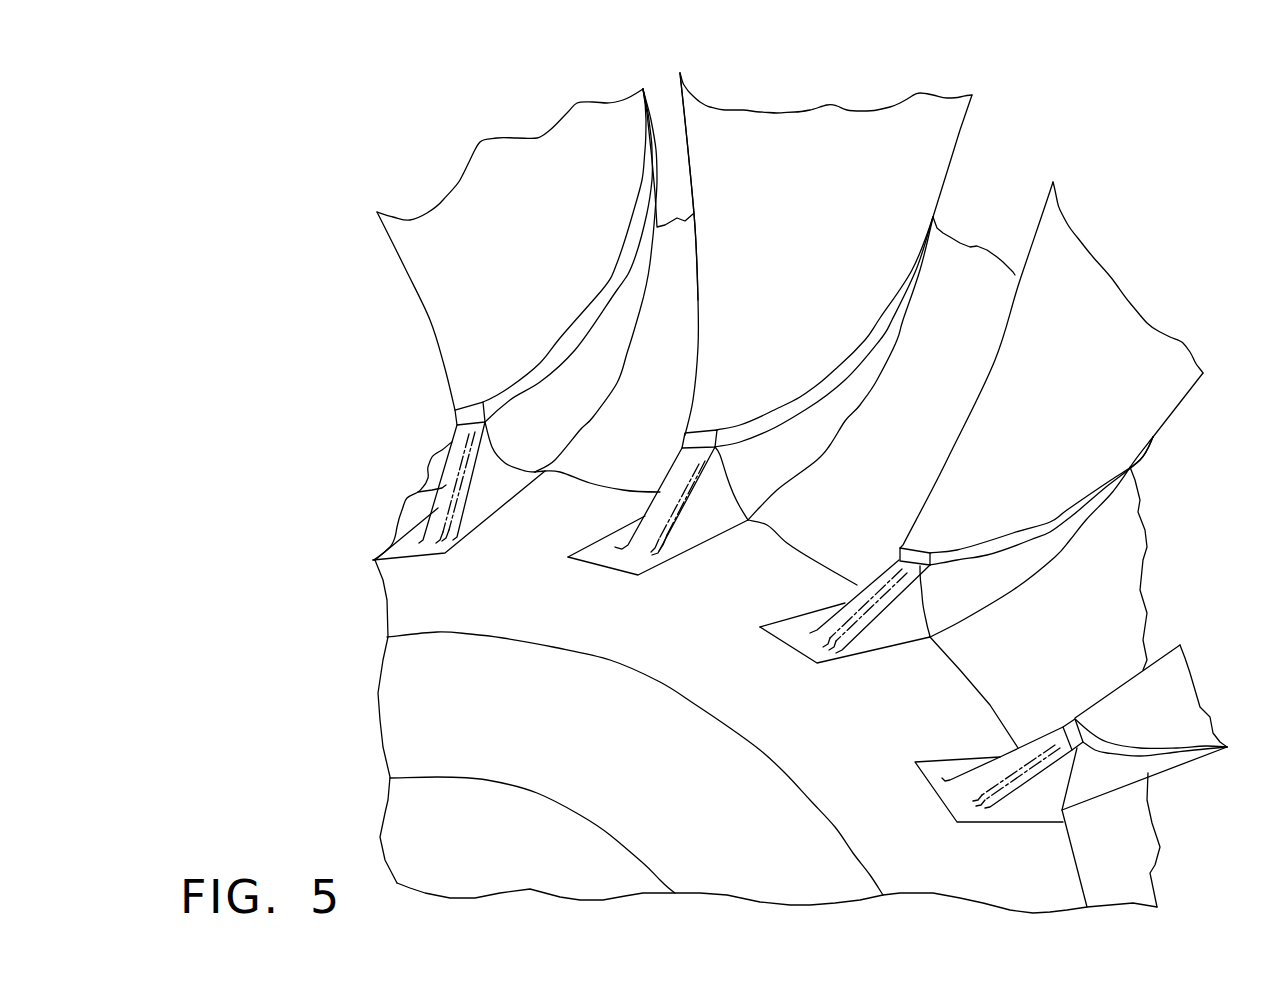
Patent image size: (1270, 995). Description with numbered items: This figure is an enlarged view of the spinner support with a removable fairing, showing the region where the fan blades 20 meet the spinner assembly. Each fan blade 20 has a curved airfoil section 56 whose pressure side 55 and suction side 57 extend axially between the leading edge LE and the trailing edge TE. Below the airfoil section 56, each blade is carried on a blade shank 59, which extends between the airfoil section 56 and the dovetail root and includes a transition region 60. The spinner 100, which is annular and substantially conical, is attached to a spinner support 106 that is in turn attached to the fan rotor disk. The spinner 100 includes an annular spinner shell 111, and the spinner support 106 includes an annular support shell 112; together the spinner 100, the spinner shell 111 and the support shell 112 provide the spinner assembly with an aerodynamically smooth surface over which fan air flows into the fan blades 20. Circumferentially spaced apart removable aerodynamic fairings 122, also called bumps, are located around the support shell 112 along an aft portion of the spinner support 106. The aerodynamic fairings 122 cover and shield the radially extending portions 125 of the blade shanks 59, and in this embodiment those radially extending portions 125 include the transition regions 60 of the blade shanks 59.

The fan blade 20 is at (823, 107).
The airfoil pressure side 55 is at (1103, 703).
The airfoil section 56 is at (928, 132).
The airfoil suction side 57 is at (1107, 413).
The blade shank 59 is at (1017, 565).
The transition region 60 is at (940, 603).
The spinner 100 is at (410, 808).
The spinner support 106 is at (412, 592).
The spinner shell 111 is at (458, 803).
The support shell 112 is at (507, 573).
The aerodynamic fairing 122 is at (490, 466).
The radially extending portion 125 is at (950, 567).
The leading edge LE is at (697, 337).
The trailing edge TE is at (950, 167).